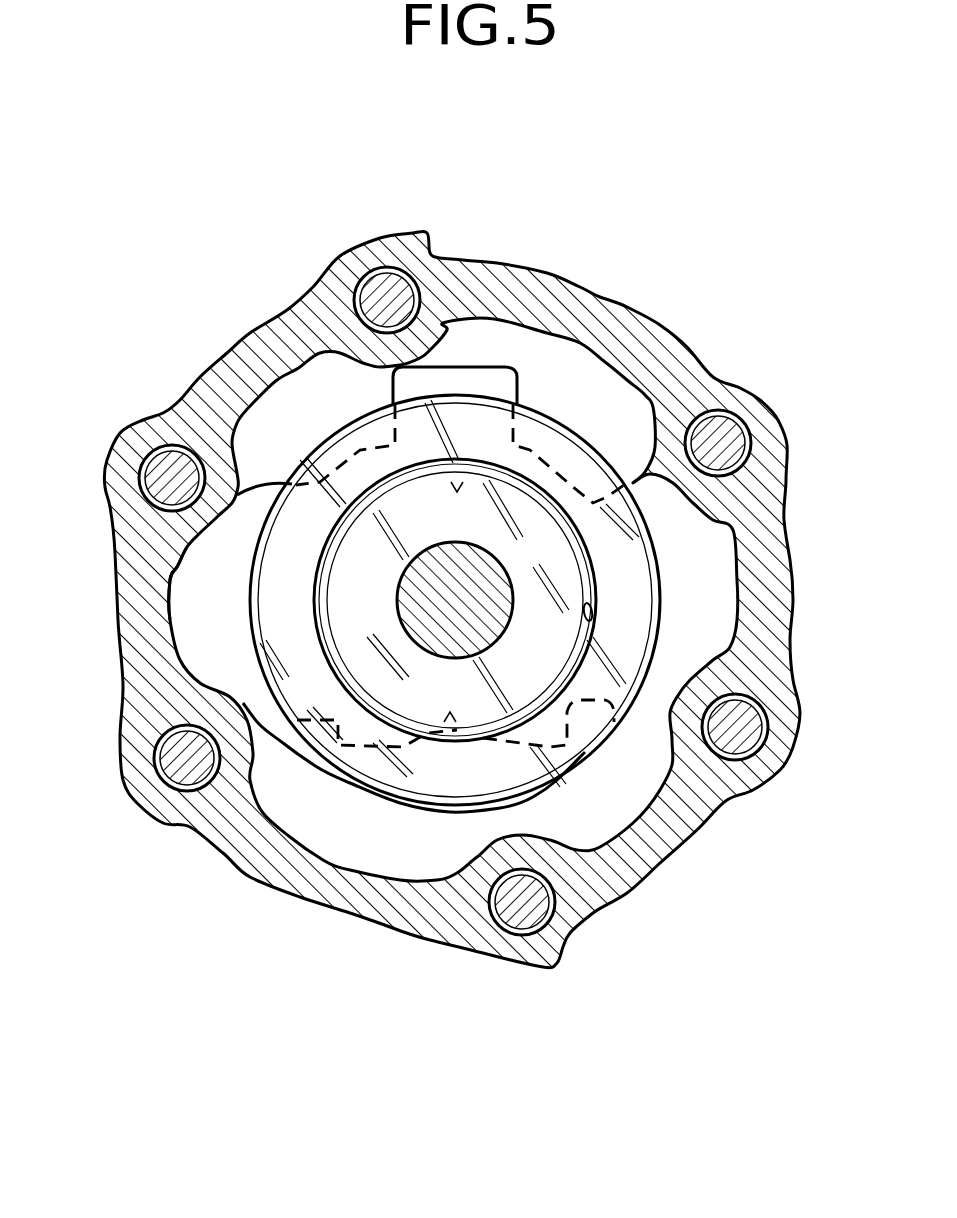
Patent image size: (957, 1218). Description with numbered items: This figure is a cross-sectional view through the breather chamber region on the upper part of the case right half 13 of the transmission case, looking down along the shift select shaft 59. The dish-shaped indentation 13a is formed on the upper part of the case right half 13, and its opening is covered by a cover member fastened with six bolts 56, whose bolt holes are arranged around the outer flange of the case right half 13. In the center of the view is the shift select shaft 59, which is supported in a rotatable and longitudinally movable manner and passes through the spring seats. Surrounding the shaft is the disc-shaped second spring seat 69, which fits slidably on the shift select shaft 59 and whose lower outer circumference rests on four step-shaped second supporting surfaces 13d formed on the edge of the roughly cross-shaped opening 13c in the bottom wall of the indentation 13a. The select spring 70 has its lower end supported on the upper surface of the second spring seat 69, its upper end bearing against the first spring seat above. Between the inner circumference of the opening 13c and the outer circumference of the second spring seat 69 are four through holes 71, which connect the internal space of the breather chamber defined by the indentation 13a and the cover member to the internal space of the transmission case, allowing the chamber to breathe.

The case right half 13 is at (452, 599).
The dish-shaped indentation 13a is at (296, 394).
The roughly cross-shaped opening 13c is at (205, 676).
The second supporting surfaces 13d is at (450, 602).
The bolts 56 is at (387, 285).
The shift select shaft 59 is at (412, 566).
The second spring seat 69 is at (635, 655).
The select spring 70 is at (575, 567).
The through holes 71 is at (460, 375).